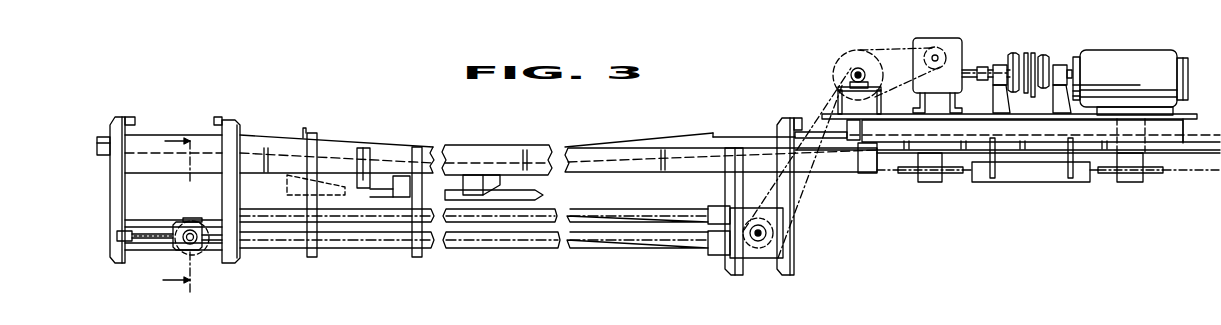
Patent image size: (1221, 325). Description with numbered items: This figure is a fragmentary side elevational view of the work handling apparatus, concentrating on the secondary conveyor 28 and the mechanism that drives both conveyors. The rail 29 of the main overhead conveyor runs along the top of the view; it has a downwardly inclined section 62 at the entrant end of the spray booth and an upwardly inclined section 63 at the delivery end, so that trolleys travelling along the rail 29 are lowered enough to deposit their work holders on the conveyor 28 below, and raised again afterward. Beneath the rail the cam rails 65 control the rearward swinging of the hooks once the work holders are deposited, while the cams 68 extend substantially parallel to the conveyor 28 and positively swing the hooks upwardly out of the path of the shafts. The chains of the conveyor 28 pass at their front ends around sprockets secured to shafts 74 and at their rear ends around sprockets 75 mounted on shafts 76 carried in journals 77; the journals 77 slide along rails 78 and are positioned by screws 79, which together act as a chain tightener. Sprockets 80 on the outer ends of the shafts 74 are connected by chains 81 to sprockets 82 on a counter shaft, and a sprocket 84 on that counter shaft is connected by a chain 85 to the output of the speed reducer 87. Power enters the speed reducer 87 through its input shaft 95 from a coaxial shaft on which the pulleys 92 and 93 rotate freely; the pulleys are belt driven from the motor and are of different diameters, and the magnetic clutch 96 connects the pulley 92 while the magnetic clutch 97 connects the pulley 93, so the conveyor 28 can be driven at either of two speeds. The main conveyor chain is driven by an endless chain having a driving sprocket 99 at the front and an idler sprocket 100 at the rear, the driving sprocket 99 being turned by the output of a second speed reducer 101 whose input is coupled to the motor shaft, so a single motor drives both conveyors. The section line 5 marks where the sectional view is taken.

The section line 5- 5 is at (176, 206).
The secondary conveyor 28 is at (516, 240).
The rail 29 is at (757, 145).
The downwardly inclined section 62 is at (276, 140).
The upwardly inclined section 63 is at (672, 137).
The cam rails 65 is at (290, 178).
The cams 68 is at (531, 195).
The shafts 74 is at (770, 236).
The sprockets 75 is at (186, 221).
The shafts 76 is at (192, 244).
The journals 77 is at (195, 223).
The rails 78 is at (138, 250).
The screws 79 is at (157, 236).
The sprockets 80 is at (755, 246).
The chains 81 is at (808, 173).
The sprockets 82 is at (850, 75).
The sprocket 84 is at (847, 62).
The chain 85 is at (900, 48).
The speed reducer 87 is at (945, 50).
The pulley 92 is at (1034, 53).
The pulley 93 is at (1026, 53).
The input shaft 95 is at (990, 79).
The magnetic clutch 96 is at (1046, 60).
The magnetic clutch 97 is at (1012, 60).
The driving sprocket 99 is at (1150, 173).
The idler sprocket 100 is at (948, 173).
The speed reducer 101 is at (1130, 62).